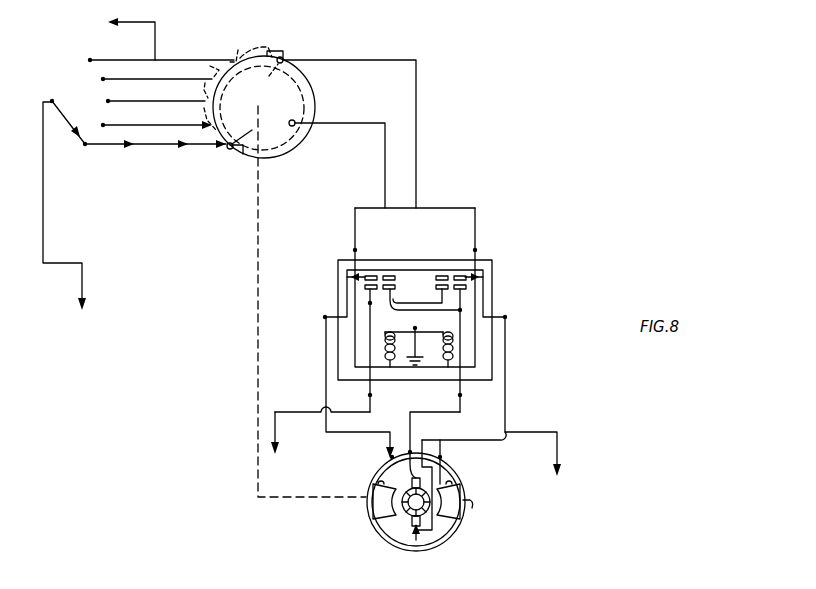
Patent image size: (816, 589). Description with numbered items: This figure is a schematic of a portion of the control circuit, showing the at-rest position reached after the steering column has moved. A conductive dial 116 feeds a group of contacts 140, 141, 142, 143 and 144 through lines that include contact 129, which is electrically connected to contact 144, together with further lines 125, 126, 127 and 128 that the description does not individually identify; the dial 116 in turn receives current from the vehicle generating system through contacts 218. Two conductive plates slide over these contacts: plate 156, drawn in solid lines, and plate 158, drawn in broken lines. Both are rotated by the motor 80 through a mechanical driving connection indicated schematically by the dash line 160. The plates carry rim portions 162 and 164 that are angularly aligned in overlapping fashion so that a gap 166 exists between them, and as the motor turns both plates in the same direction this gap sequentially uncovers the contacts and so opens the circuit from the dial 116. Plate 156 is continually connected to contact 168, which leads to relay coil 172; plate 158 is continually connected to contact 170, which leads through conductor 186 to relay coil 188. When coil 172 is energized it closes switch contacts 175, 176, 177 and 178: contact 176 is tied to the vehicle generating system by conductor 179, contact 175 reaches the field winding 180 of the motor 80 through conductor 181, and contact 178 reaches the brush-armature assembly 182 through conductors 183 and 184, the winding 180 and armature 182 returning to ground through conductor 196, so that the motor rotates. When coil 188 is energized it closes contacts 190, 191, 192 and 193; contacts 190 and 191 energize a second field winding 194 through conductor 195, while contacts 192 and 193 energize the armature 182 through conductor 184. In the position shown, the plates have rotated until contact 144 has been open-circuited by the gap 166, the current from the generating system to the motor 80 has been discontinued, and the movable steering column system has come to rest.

The motor 80 is at (411, 495).
The conductive dial 116 is at (68, 127).
The input line 125 is at (100, 57).
The input line 126 is at (103, 77).
The input line 127 is at (108, 100).
The input line 128 is at (103, 123).
The contact 129 is at (90, 142).
The contact 140 is at (236, 48).
The contact 141 is at (208, 72).
The contact 142 is at (205, 90).
The contact 143 is at (205, 114).
The contact 144 is at (243, 133).
The plate 156 is at (262, 100).
The plate 158 is at (288, 56).
The dash line 160 is at (254, 316).
The rim portion 162 is at (305, 75).
The rim portion 164 is at (257, 40).
The gap 166 is at (233, 150).
The contact 168 is at (292, 119).
The contact 170 is at (268, 74).
The relay coil 172 is at (410, 368).
The switch contact 175 is at (370, 275).
The switch contact 176 is at (396, 323).
The switch contact 177 is at (389, 275).
The switch contact 178 is at (396, 286).
The conductor 179 is at (278, 424).
The field winding 180 is at (373, 514).
The conductor 181 is at (348, 446).
The brush-armature assembly 182 is at (405, 432).
The conductor 183 is at (414, 329).
The conductor 184 is at (462, 396).
The conductor 186 is at (420, 75).
The relay coil 188 is at (466, 326).
The contact 190 is at (441, 275).
The contact 191 is at (436, 288).
The contact 192 is at (461, 275).
The contact 193 is at (466, 287).
The field winding 194 is at (458, 478).
The conductor 195 is at (510, 396).
The conductor 196 is at (560, 437).
The contacts 218 is at (108, 33).